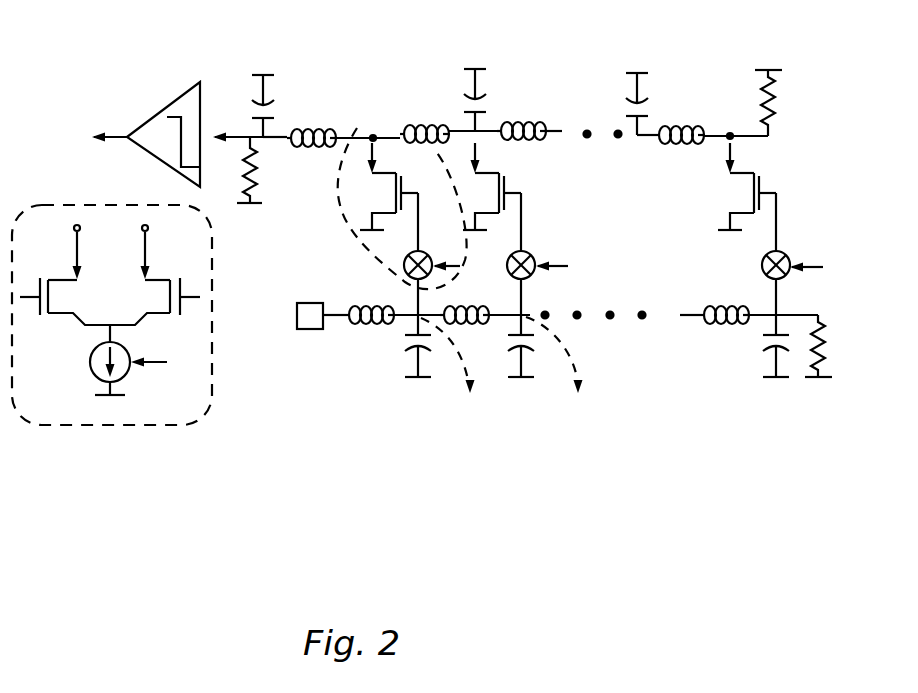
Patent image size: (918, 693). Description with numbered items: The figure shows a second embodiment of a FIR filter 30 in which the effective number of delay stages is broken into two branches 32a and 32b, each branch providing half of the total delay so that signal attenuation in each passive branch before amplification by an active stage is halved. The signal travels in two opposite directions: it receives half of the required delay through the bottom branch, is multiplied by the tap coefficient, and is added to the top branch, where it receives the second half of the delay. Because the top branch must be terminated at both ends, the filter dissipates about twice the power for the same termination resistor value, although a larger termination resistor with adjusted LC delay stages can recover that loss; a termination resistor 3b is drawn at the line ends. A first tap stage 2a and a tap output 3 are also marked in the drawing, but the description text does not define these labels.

The FIR filter 30 is at (428, 518).
The branch 32a is at (250, 130).
The branch 32b is at (529, 352).
The termination resistor 3b is at (783, 108).
The first tap stage 2a is at (357, 128).
The tap output signal 3 is at (443, 44).